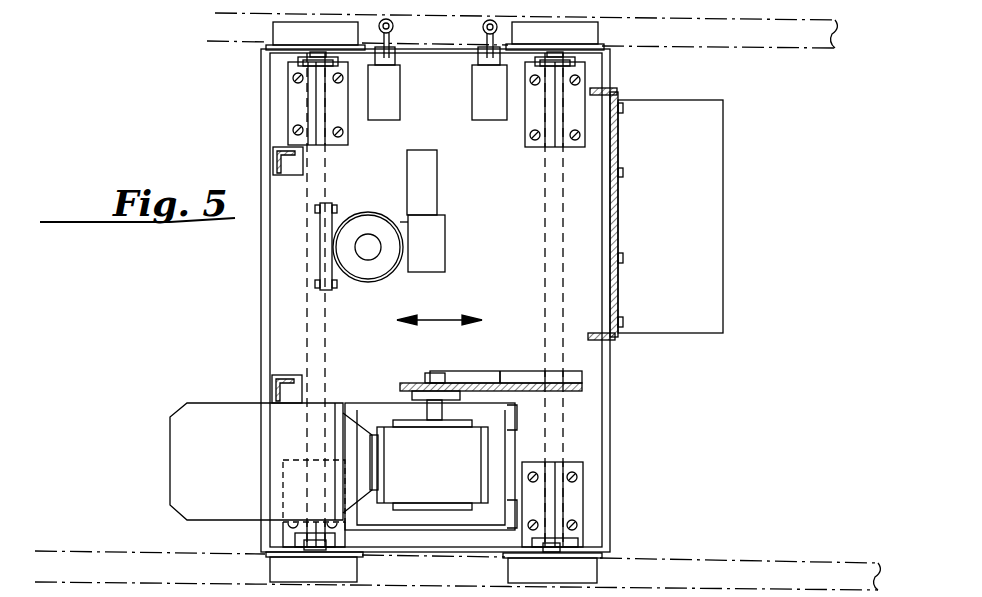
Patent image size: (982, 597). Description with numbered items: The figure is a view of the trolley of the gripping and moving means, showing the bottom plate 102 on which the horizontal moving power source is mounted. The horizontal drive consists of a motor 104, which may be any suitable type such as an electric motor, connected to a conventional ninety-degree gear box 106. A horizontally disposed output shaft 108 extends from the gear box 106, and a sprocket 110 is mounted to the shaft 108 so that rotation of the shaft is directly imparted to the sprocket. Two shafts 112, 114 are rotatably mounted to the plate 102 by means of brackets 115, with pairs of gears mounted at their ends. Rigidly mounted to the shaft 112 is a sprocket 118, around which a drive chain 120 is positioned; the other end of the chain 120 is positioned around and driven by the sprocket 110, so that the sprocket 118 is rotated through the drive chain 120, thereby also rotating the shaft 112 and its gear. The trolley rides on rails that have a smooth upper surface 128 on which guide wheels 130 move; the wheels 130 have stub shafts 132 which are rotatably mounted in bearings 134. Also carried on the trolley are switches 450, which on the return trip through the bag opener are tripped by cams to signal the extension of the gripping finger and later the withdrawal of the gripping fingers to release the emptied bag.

The bottom plate 102 is at (518, 227).
The motor 104 is at (205, 412).
The gear box 106 is at (452, 472).
The output shaft 108 is at (430, 405).
The sprocket 110 is at (425, 382).
The shaft 112 is at (596, 248).
The shaft 114 is at (312, 307).
The brackets 115 is at (295, 105).
The sprocket 118 is at (585, 391).
The drive chain 120 is at (500, 378).
The smooth upper surface 128 is at (770, 42).
The guide wheel 130 is at (283, 32).
The stub shafts 132 is at (305, 58).
The bearing 134 is at (340, 82).
The switches 450 is at (482, 90).